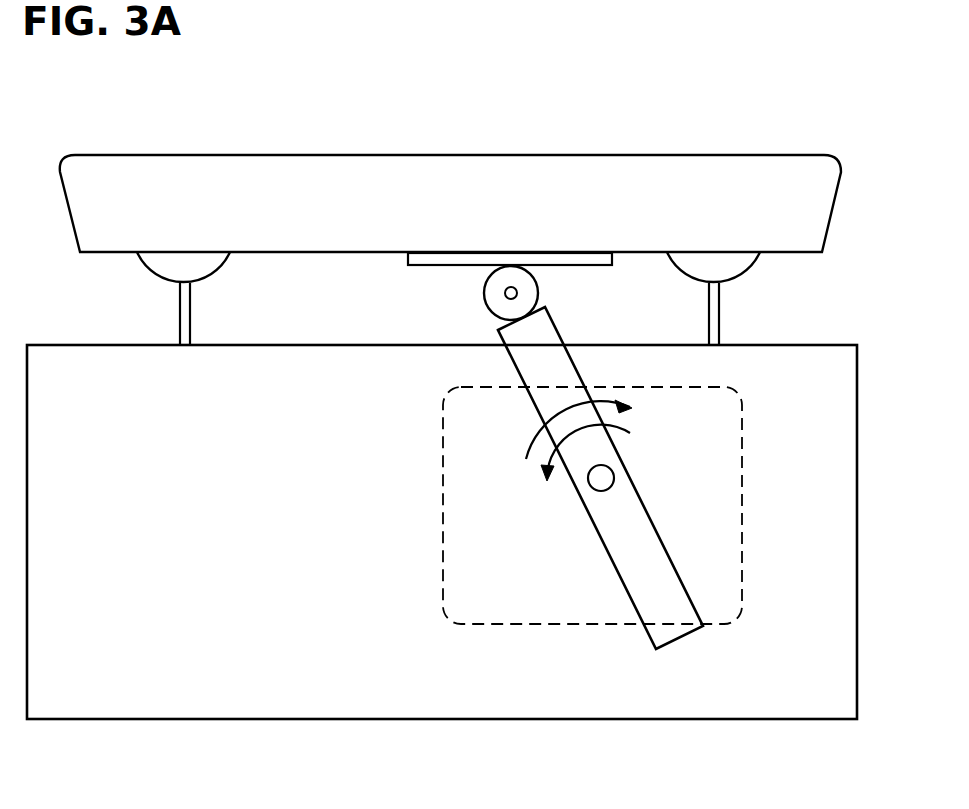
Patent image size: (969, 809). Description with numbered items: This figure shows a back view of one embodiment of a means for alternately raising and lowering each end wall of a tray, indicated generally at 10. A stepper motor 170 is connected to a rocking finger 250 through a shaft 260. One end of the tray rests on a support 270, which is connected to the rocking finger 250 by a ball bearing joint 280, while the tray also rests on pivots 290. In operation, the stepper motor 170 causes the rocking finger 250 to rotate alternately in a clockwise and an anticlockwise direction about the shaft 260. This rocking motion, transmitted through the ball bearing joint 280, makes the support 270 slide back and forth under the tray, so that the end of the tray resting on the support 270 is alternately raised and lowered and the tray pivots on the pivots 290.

The object positioning apparatus 10 is at (566, 126).
The stepper motor 170 is at (443, 505).
The rocking finger 250 is at (615, 570).
The shaft 260 is at (614, 478).
The support 270 is at (408, 258).
The ball bearing joint 280 is at (483, 290).
The pivots 290 is at (148, 273).